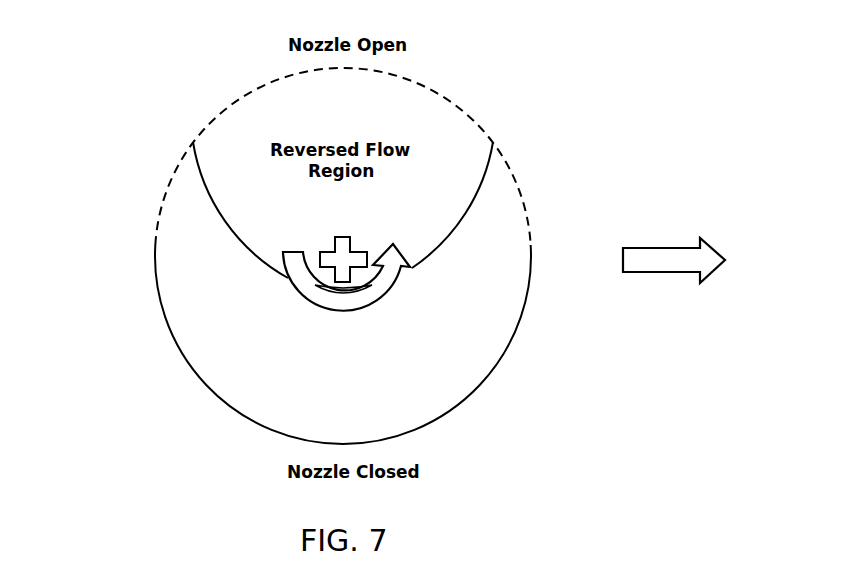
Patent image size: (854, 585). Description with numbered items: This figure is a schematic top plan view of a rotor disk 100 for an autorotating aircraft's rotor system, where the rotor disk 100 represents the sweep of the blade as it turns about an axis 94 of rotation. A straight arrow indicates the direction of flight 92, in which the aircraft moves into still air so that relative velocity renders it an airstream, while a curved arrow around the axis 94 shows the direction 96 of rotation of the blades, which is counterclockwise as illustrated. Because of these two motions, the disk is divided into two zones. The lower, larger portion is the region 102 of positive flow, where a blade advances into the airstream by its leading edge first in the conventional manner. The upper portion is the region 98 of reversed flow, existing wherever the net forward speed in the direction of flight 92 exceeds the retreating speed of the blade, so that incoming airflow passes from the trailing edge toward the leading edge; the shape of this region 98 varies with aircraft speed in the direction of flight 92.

The direction of flight 92 is at (648, 253).
The axis of rotation 94 is at (357, 252).
The direction of rotation 96 is at (357, 302).
The region of reversed flow 98 is at (240, 118).
The rotor disk 100 is at (285, 256).
The region of positive flow 102 is at (243, 390).